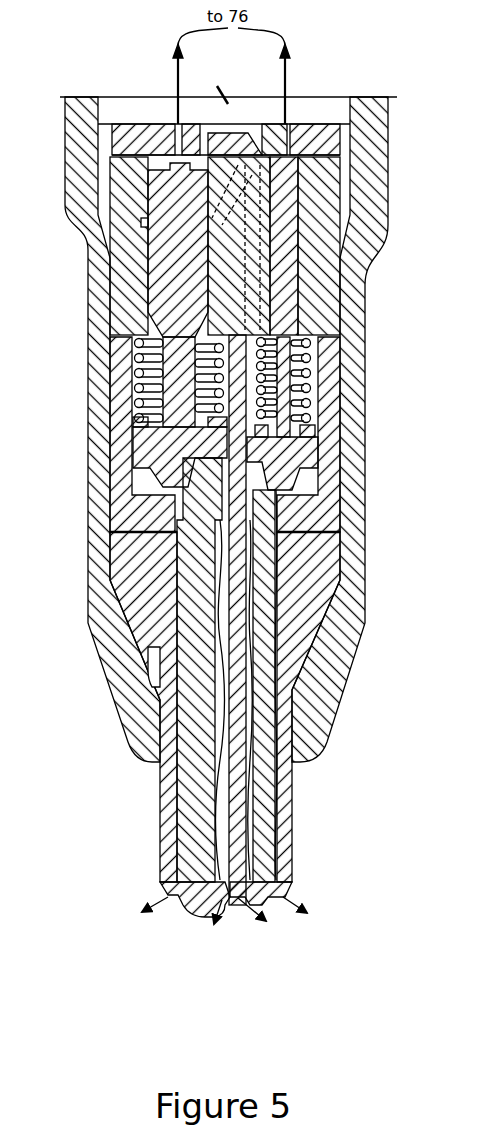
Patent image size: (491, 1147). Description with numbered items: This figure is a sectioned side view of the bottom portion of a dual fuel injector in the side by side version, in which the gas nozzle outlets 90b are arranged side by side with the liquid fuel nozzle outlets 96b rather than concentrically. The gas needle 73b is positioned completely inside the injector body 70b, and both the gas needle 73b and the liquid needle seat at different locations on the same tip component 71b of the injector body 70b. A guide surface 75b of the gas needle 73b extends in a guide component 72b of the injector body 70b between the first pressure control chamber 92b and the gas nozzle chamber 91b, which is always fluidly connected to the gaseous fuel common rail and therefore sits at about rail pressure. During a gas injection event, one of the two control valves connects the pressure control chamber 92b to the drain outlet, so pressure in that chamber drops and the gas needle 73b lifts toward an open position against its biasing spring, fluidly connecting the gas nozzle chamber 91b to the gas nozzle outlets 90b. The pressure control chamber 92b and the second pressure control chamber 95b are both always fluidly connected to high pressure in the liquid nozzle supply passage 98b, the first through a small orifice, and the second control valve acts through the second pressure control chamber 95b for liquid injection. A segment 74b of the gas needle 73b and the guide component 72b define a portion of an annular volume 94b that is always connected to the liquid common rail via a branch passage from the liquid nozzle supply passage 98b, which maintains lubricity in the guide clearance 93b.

The injector body 70b is at (365, 366).
The tip component 71b is at (293, 798).
The guide component 72b is at (345, 290).
The gas needle 73b is at (187, 653).
The segment of gas needle 74b is at (128, 243).
The guide surface 75b is at (155, 290).
The gas nozzle outlets 90b is at (172, 892).
The gas nozzle chamber 91b is at (132, 485).
The pressure control chamber 92b is at (160, 155).
The guide clearance 93b is at (136, 340).
The annular volume 94b is at (141, 223).
The second pressure control chamber 95b is at (290, 152).
The liquid fuel nozzle outlets 96b is at (282, 893).
The liquid nozzle supply passage 98b is at (258, 196).